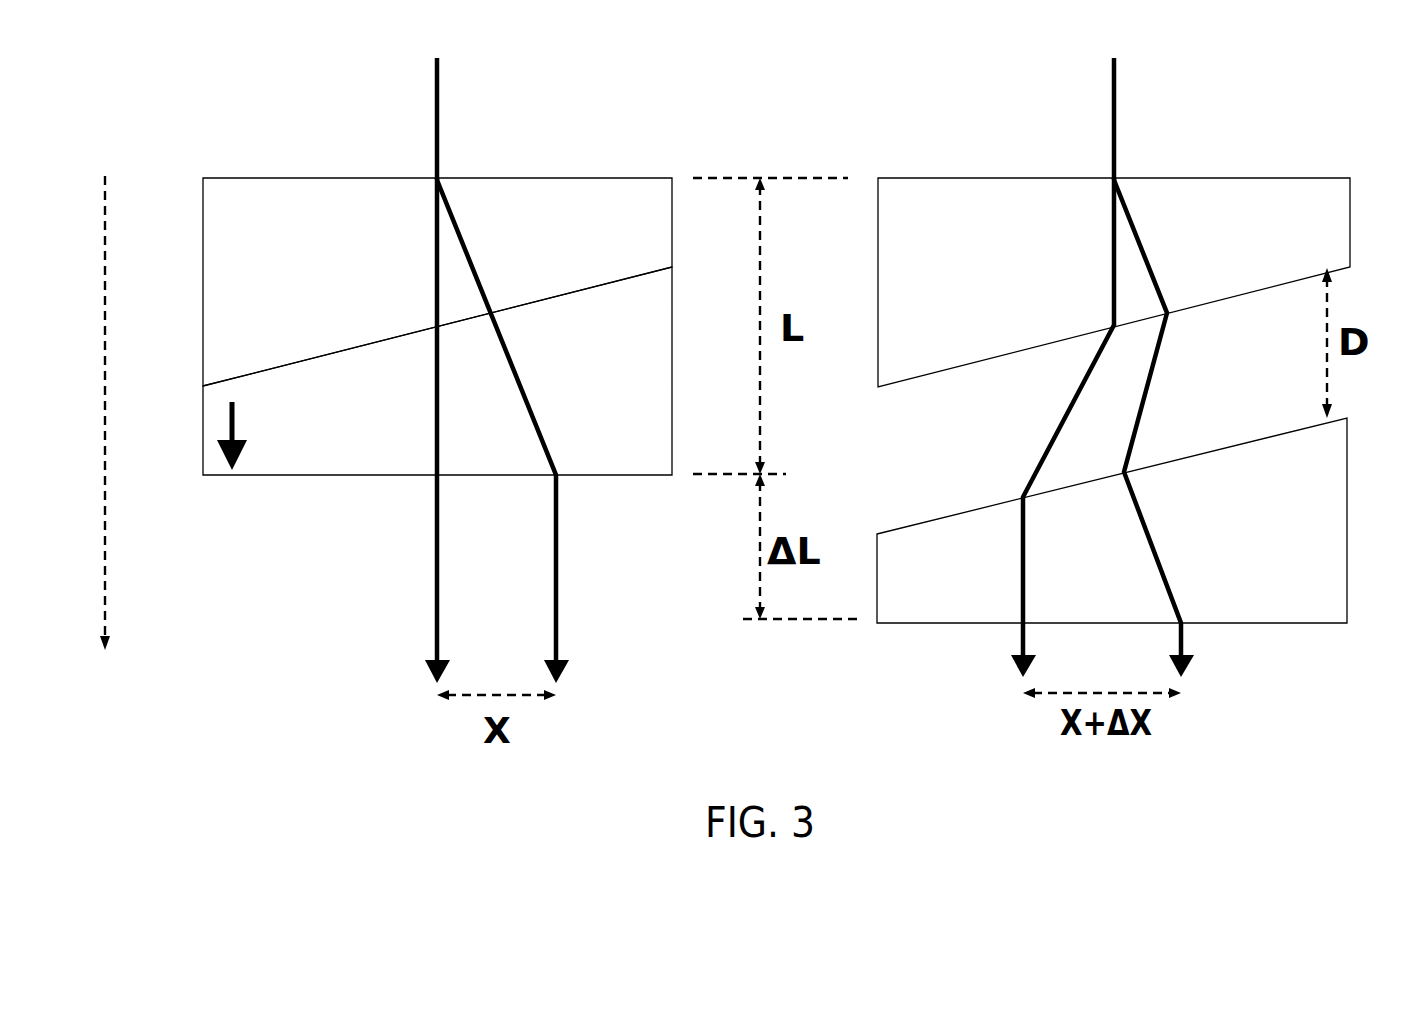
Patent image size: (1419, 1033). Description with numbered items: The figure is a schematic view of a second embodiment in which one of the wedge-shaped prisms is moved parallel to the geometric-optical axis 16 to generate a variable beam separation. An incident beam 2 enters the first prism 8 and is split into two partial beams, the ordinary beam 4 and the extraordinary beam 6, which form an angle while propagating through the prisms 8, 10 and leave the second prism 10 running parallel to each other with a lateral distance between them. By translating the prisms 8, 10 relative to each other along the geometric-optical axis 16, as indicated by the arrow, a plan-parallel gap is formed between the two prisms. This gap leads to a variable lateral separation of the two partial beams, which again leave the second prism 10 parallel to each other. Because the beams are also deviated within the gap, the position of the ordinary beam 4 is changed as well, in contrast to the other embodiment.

The incident beam 2 is at (439, 115).
The ordinary beam 4 is at (432, 625).
The extraordinary beam 6 is at (558, 633).
The first prism 8 is at (292, 197).
The second prism 10 is at (360, 459).
The geometric-optical axis 16 is at (105, 556).